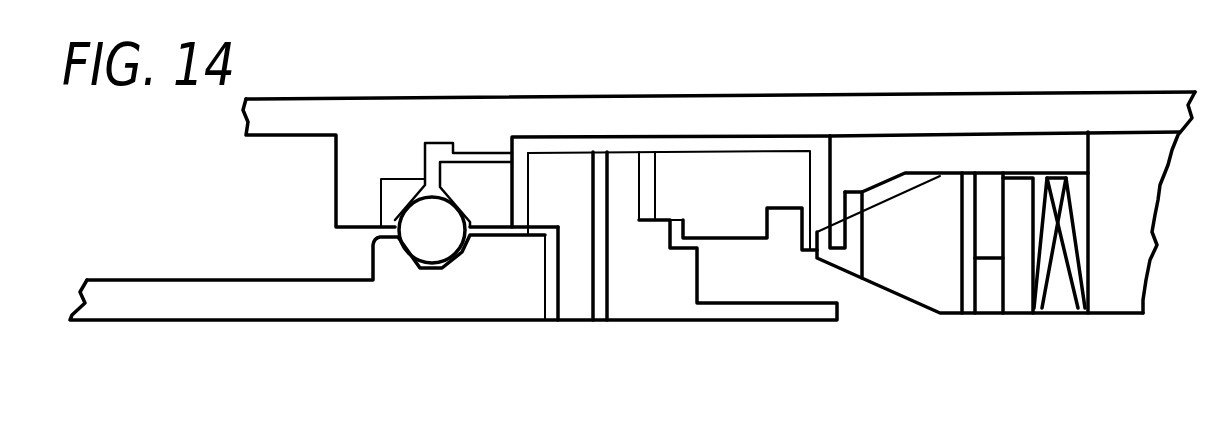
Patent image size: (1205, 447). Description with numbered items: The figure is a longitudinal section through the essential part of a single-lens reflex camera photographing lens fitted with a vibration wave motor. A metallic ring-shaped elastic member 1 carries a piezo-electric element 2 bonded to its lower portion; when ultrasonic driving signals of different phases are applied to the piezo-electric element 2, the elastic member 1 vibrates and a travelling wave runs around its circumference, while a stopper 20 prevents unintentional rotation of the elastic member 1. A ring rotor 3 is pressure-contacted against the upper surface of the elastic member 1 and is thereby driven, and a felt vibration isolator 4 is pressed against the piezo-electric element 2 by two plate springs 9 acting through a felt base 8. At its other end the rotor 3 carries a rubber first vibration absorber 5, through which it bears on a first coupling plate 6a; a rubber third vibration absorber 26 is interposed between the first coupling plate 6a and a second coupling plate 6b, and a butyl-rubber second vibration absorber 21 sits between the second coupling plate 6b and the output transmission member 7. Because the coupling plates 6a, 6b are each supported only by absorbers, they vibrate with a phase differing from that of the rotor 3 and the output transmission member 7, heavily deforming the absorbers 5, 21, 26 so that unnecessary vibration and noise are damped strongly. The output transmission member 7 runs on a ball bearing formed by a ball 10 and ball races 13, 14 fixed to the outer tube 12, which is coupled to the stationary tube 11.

The elastic member 1 is at (937, 202).
The piezo-electric element 2 is at (989, 267).
The rotor 3 is at (744, 163).
The vibration isolator 4 is at (990, 190).
The first vibration absorber 5 is at (650, 158).
The first coupling plate 6a is at (623, 168).
The second coupling plate 6b is at (563, 168).
The output transmission member 7 is at (452, 302).
The felt base 8 is at (1017, 303).
The plate springs 9 is at (1078, 318).
The ball 10 is at (420, 247).
The stationary tube 11 is at (1123, 303).
The outer tube 12 is at (296, 117).
The ball race 13 is at (475, 172).
The ball race 14 is at (393, 199).
The stopper 20 is at (873, 150).
The second vibration absorber 21 is at (547, 312).
The third vibration absorber 26 is at (600, 312).